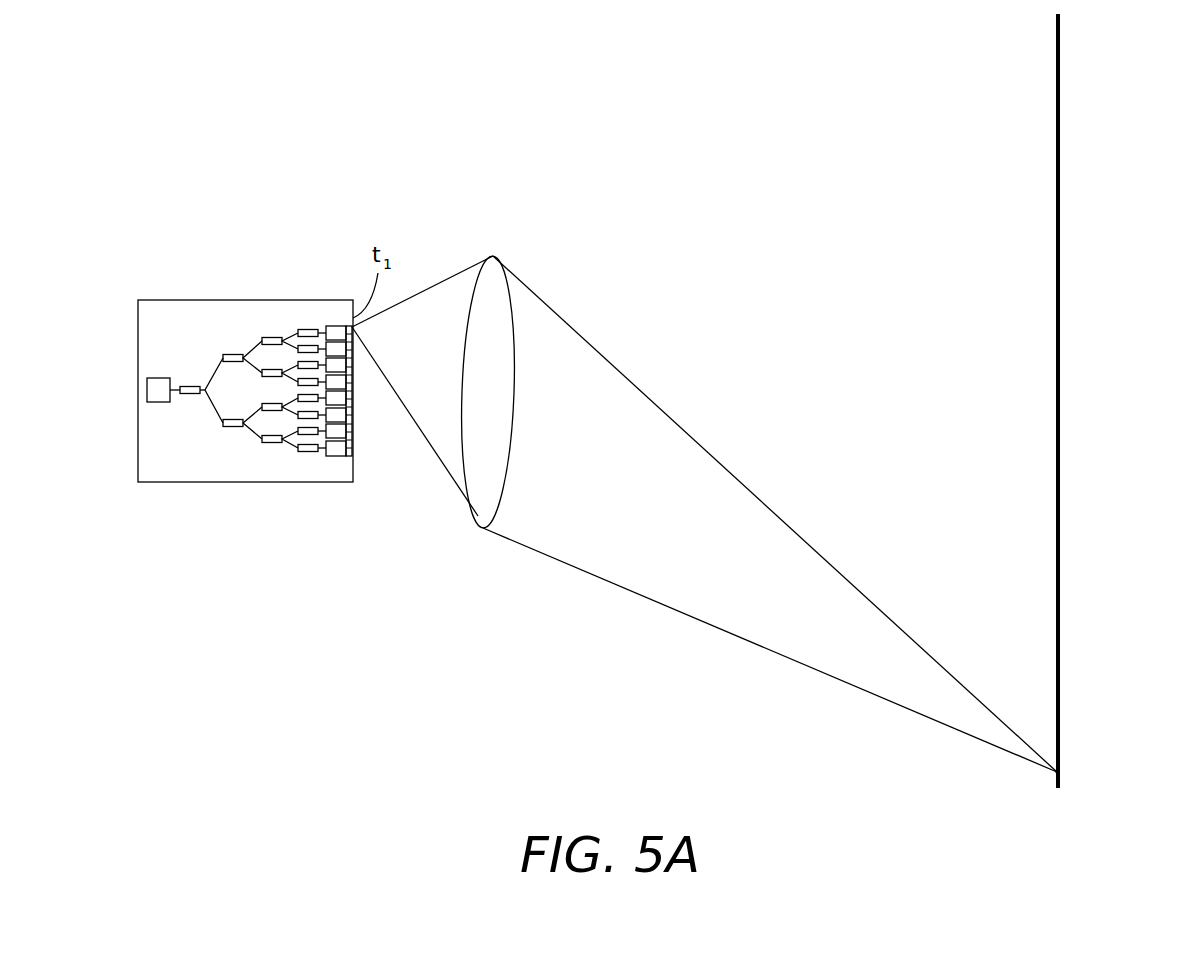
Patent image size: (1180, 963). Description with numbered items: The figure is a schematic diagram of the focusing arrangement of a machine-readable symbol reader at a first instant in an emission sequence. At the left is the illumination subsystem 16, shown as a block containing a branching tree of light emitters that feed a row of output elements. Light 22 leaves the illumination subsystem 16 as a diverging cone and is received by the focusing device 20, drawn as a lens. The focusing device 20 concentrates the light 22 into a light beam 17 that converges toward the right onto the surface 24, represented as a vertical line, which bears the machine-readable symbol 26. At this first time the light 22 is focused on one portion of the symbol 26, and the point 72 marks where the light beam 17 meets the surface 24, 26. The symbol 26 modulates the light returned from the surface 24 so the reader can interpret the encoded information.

The illumination subsystem 16 is at (265, 298).
The light beam 17 is at (777, 653).
The focusing device 20 is at (483, 323).
The light 22 is at (432, 443).
The surface 24 is at (1009, 401).
The machine-readable symbol 26 is at (1056, 312).
The focal point 72 is at (1057, 772).